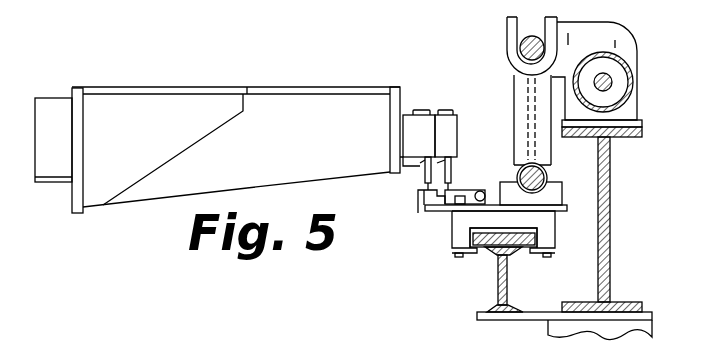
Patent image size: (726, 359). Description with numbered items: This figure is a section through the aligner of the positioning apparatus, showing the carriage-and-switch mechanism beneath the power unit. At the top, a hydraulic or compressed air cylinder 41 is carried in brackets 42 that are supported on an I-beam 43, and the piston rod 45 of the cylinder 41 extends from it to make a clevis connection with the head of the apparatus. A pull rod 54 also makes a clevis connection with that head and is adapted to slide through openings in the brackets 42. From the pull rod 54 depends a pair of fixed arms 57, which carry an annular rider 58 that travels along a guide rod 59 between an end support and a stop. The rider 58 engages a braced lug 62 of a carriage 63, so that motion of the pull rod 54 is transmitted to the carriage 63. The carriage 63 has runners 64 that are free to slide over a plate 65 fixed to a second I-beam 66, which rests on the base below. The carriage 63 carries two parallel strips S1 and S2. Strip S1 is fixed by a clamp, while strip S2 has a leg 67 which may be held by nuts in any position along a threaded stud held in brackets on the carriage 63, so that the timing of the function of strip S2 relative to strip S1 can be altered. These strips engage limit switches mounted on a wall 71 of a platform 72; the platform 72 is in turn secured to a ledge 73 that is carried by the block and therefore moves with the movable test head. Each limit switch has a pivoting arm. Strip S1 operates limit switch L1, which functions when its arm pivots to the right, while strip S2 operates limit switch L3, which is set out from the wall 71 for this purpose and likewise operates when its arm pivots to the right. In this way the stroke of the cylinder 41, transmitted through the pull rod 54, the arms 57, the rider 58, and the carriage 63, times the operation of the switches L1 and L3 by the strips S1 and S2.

The hydraulic or compressed air cylinder 41 is at (630, 73).
The brackets 42 is at (637, 44).
The I-beam 43 is at (608, 193).
The piston rod 45 is at (612, 83).
The pull rod 54 is at (527, 44).
The fixed arms 57 is at (518, 96).
The annular rider 58 is at (526, 165).
The guide rod 59 is at (543, 177).
The braced lug 62 is at (562, 193).
The carriage 63 is at (567, 211).
The runners 64 is at (553, 240).
The plate 65 is at (521, 243).
The I-beam 66 is at (504, 266).
The leg 67 is at (468, 194).
The wall 71 is at (398, 105).
The platform 72 is at (296, 100).
The ledge 73 is at (128, 103).
The limit switch L1 is at (410, 135).
The limit switch L3 is at (447, 126).
The strip S1 is at (422, 198).
The strip S2 is at (462, 203).